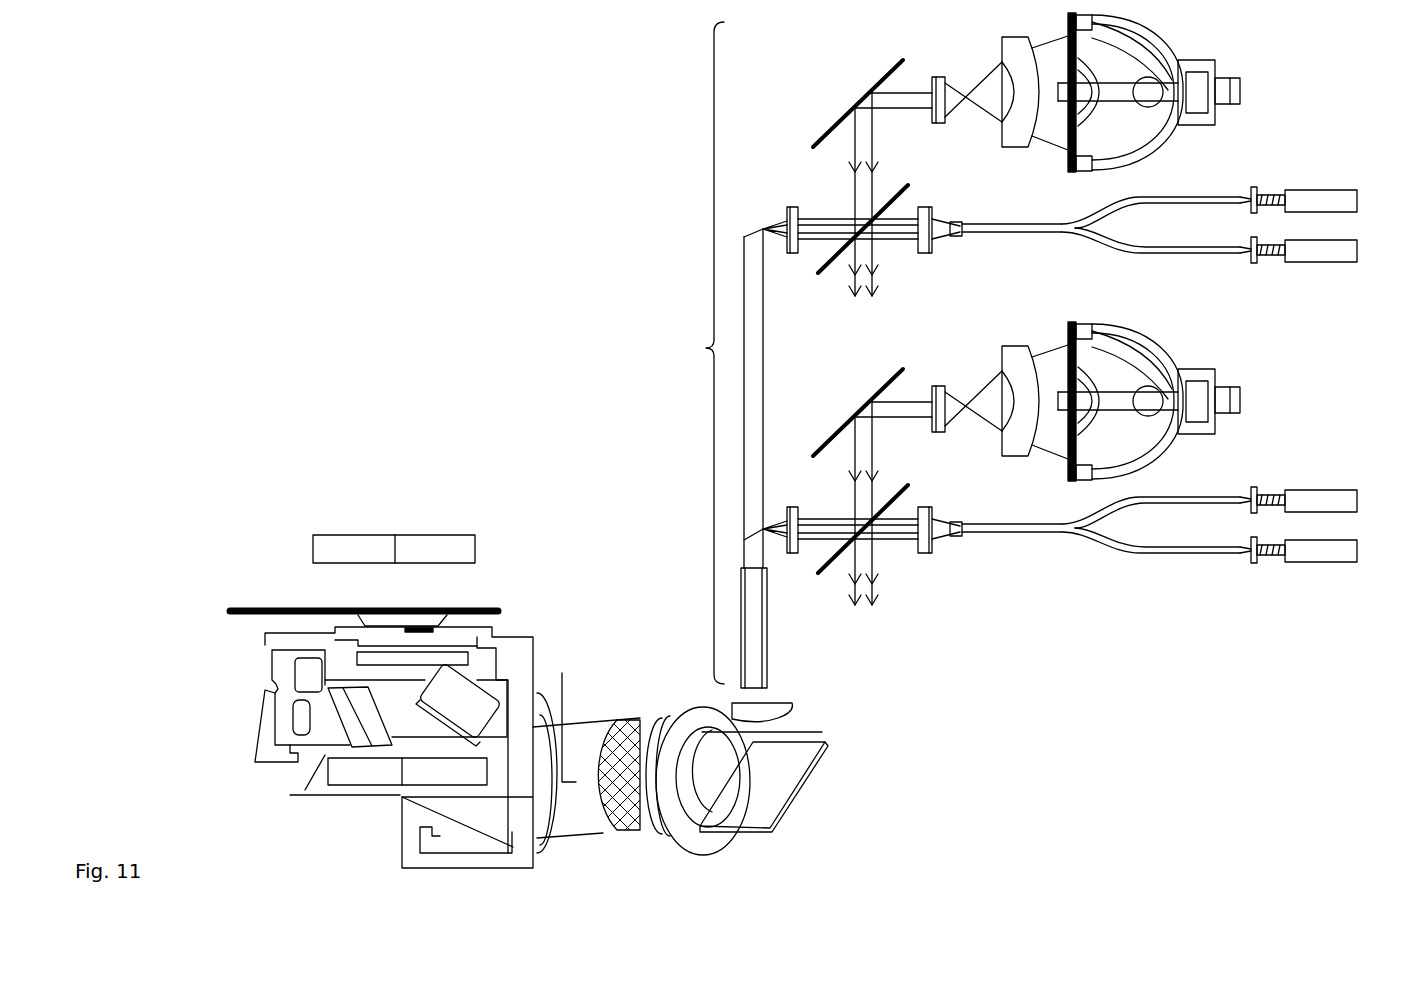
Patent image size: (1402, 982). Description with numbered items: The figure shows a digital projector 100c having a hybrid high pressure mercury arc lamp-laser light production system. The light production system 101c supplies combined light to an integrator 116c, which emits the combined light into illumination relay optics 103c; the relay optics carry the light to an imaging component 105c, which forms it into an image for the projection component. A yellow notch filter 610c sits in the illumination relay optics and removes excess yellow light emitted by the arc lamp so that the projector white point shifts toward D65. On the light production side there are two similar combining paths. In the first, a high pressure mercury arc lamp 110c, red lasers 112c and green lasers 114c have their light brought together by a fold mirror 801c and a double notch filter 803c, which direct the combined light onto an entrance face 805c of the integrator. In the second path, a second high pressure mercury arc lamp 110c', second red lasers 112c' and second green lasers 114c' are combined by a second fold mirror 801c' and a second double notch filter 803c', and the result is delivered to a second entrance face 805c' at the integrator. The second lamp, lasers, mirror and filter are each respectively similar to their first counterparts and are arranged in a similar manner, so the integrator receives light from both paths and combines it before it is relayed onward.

The digital projector 100c is at (226, 122).
The light production system 101c is at (688, 353).
The illumination relay optics 103c is at (622, 655).
The imaging component 105c is at (443, 622).
The high pressure mercury arc lamp 110c is at (1167, 86).
The second high pressure mercury arc lamp 110c' is at (1151, 390).
The red lasers 112c is at (1209, 186).
The second red lasers 112c' is at (1217, 487).
The green lasers 114c is at (1209, 262).
The second green lasers 114c' is at (1209, 562).
The integrator 116c is at (757, 372).
The yellow notch filter 610c is at (638, 832).
The fold mirror 801c is at (846, 98).
The second fold mirror 801c' is at (894, 401).
The double notch filter 803c is at (897, 218).
The second double notch filter 803c' is at (904, 515).
The entrance face 805c is at (764, 203).
The second entrance face 805c' is at (786, 563).